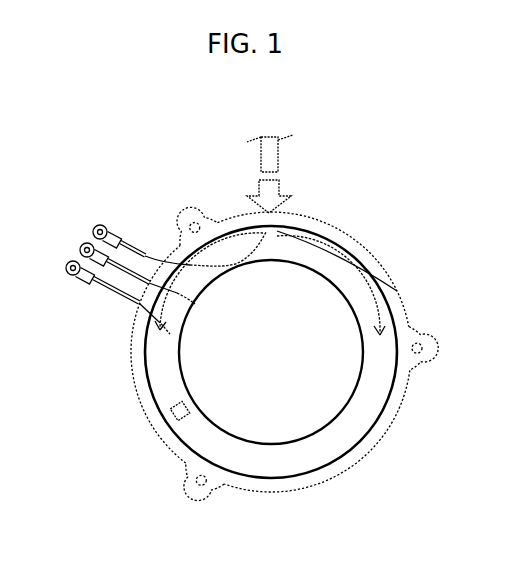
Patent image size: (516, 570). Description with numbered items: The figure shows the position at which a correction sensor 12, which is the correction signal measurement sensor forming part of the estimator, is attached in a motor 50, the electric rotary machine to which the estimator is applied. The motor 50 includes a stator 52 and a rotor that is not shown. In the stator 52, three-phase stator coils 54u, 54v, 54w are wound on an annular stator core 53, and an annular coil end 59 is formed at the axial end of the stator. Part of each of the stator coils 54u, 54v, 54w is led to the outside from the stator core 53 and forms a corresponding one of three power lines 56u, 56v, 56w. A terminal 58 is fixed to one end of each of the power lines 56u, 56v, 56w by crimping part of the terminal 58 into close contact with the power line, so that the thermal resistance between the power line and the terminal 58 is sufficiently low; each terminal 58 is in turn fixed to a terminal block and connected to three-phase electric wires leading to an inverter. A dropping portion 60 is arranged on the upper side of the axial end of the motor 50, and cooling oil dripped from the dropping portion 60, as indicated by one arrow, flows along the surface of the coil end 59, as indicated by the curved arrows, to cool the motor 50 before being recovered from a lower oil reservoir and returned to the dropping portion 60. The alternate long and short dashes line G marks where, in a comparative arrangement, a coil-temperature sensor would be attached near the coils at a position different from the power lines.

The motor 50 is at (420, 293).
The stator 52 is at (398, 396).
The stator core 53 is at (378, 445).
The coil end 59 is at (291, 478).
The dropping portion 60 is at (279, 175).
The terminal 58 is at (70, 262).
The correction sensor 12 is at (80, 283).
The power line 56u is at (153, 253).
The power line 56v is at (131, 293).
The power line 56w is at (114, 290).
The stator coil 54u is at (237, 264).
The stator coil 54v is at (180, 295).
The stator coil 54w is at (149, 328).
The alternate long and short dashes line G is at (190, 402).